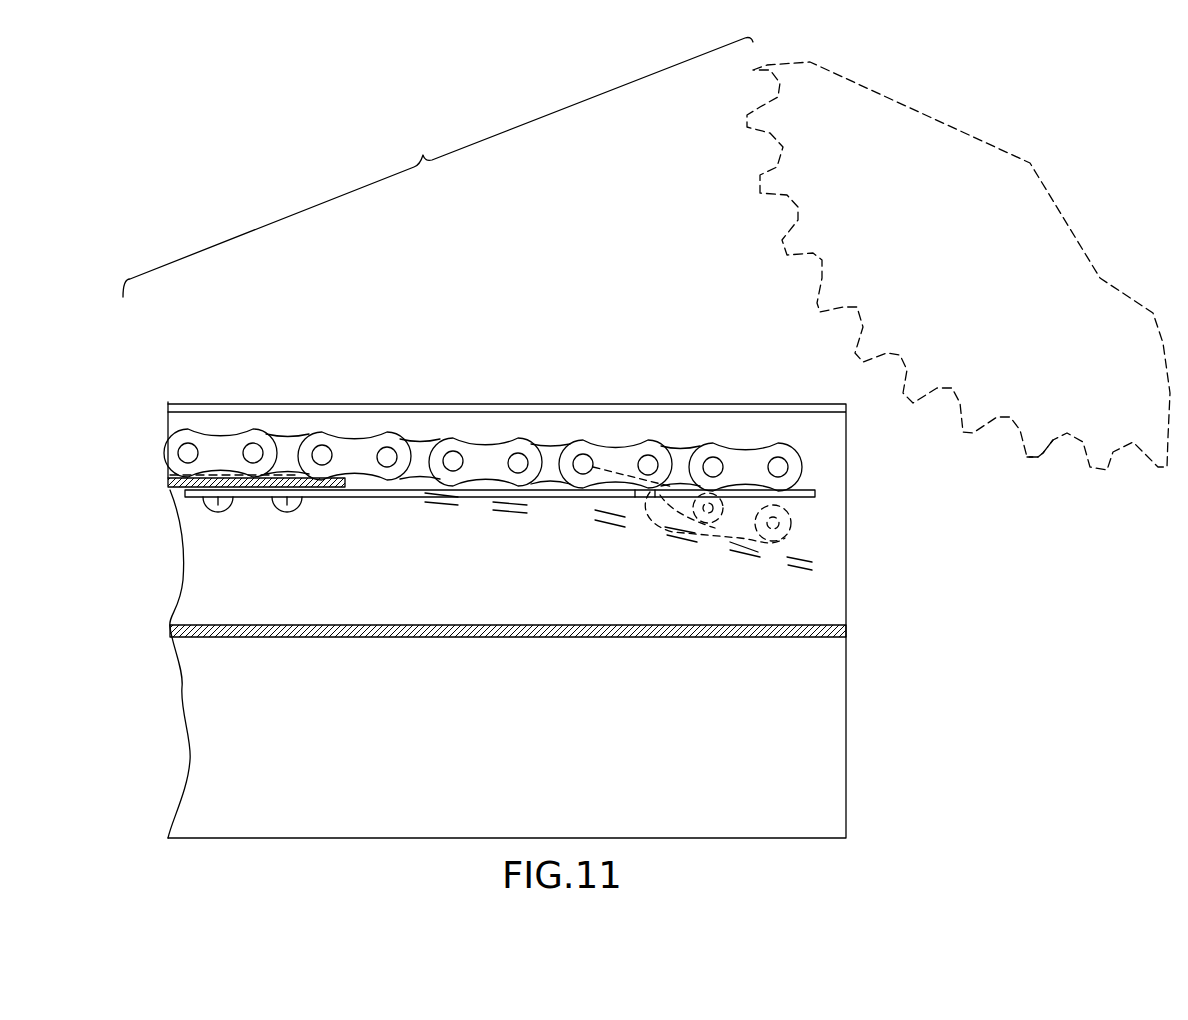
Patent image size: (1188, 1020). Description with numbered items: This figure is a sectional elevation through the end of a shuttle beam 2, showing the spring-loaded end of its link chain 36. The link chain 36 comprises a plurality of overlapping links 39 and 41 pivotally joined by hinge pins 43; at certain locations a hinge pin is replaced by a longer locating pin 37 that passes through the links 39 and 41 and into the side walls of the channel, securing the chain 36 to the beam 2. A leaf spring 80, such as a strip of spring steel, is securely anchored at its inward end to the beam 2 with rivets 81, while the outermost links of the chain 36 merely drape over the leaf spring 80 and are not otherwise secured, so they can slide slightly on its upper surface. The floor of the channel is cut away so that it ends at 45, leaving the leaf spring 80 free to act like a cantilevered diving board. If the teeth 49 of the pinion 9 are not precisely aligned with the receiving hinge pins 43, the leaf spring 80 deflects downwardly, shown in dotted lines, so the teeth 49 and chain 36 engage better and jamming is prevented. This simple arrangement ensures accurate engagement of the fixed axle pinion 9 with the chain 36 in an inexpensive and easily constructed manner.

The beam 2 is at (845, 778).
The pinion 9 is at (960, 332).
The link chain 36 is at (343, 440).
The locating pin 37 is at (250, 448).
The link 39 is at (423, 442).
The link 41 is at (603, 448).
The hinge pin 43 is at (387, 447).
The end of channel floor 45 is at (345, 488).
The teeth 49 is at (1038, 457).
The leaf spring 80 is at (815, 497).
The rivets 81 is at (218, 503).